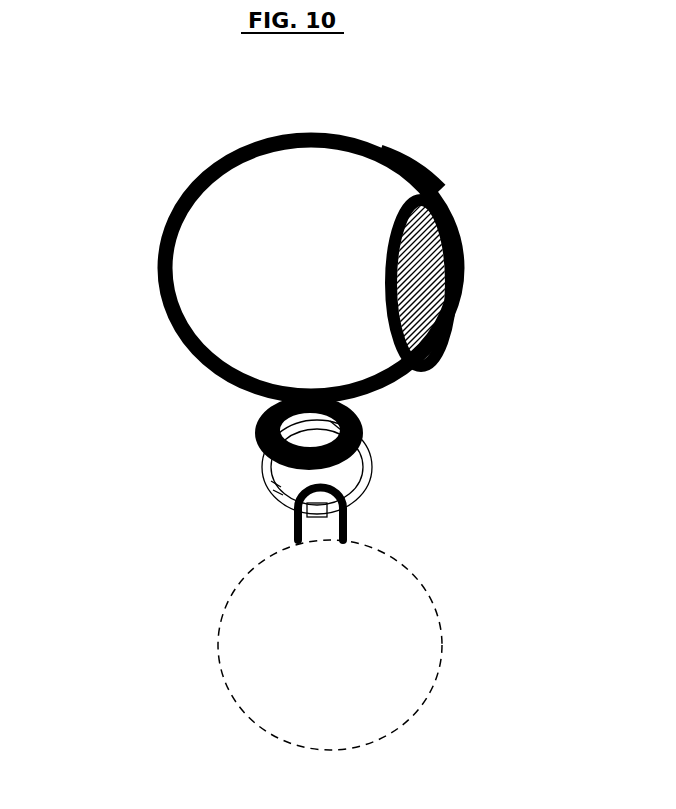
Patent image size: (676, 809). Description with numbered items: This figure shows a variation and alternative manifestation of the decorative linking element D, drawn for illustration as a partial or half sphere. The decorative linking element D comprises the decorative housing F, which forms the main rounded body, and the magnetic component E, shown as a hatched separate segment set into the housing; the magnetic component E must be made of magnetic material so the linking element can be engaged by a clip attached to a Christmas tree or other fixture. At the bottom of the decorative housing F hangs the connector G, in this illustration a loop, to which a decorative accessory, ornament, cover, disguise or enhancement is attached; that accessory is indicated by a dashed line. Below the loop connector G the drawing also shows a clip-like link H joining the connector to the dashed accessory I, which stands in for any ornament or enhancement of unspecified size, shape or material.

The decorative linking element D is at (246, 255).
The magnetic component E is at (424, 283).
The decorative housing F is at (437, 141).
The connector G is at (364, 433).
The carabiner clip H is at (250, 481).
The attached object (phantom) I is at (368, 645).